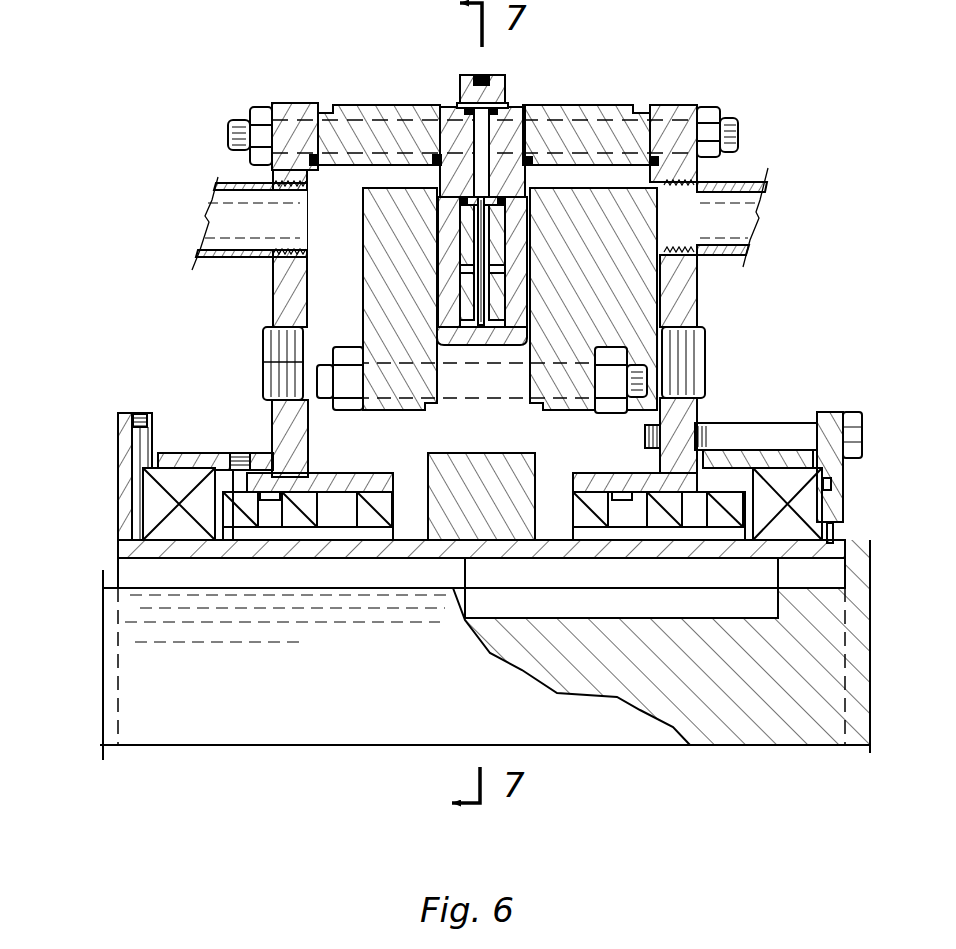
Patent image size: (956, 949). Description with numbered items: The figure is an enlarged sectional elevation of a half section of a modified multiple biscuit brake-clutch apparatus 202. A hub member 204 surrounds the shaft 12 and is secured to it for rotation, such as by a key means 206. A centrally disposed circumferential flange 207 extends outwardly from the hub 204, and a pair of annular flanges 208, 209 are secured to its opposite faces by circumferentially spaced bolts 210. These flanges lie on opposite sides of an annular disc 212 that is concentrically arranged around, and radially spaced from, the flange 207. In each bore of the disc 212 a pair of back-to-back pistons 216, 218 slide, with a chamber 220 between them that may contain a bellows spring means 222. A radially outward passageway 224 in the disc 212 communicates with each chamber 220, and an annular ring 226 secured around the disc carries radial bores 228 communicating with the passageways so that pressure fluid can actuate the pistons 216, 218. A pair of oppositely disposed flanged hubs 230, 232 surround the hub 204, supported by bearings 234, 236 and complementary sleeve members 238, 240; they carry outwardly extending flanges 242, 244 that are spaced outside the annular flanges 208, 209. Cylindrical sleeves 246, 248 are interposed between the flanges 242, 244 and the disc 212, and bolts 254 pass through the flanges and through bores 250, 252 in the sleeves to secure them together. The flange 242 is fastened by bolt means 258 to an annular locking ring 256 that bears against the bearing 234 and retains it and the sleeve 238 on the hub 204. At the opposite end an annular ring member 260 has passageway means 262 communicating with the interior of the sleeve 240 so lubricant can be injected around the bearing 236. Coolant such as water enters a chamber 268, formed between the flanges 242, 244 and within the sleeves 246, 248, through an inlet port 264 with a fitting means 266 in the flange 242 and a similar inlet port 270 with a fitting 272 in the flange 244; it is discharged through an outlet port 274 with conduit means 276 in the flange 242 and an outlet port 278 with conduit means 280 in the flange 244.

The shaft 12 is at (195, 733).
The multiple biscuit brake-clutch apparatus 202 is at (485, 308).
The hub member 204 is at (154, 550).
The key means 206 is at (505, 607).
The circumferential flange 207 is at (497, 477).
The annular flange 208 is at (572, 272).
The annular flange 209 is at (382, 278).
The bolts 210 is at (608, 353).
The annular disc 212 is at (508, 352).
The piston 216 is at (503, 240).
The piston 218 is at (468, 249).
The chamber 220 is at (493, 202).
The bellows spring means 222 is at (482, 222).
The passageway 224 is at (484, 165).
The annular ring 226 is at (460, 76).
The bores 228 is at (486, 75).
The flanged hub 230 is at (617, 482).
The flanged hub 232 is at (383, 483).
The bearing 234 is at (787, 540).
The bearing 236 is at (184, 523).
The sleeve member 238 is at (723, 455).
The sleeve member 240 is at (194, 452).
The circumferential flange 242 is at (683, 283).
The circumferential flange 244 is at (293, 272).
The cylindrical sleeve 246 is at (628, 110).
The cylindrical sleeve 248 is at (352, 113).
The bores 250 is at (590, 127).
The bores 252 is at (372, 126).
The bolts 254 is at (245, 110).
The annular locking ring 256 is at (835, 417).
The bolt means 258 is at (853, 437).
The annular ring member 260 is at (121, 427).
The passageway means 262 is at (134, 442).
The inlet port 264 is at (702, 340).
The fitting means 266 is at (702, 375).
The chamber 268 is at (318, 433).
The inlet port 270 is at (283, 338).
The fitting 272 is at (276, 364).
The outlet port 274 is at (735, 188).
The fitting or conduit means 276 is at (752, 192).
The outlet port 278 is at (296, 192).
The fitting or conduit means 280 is at (240, 257).